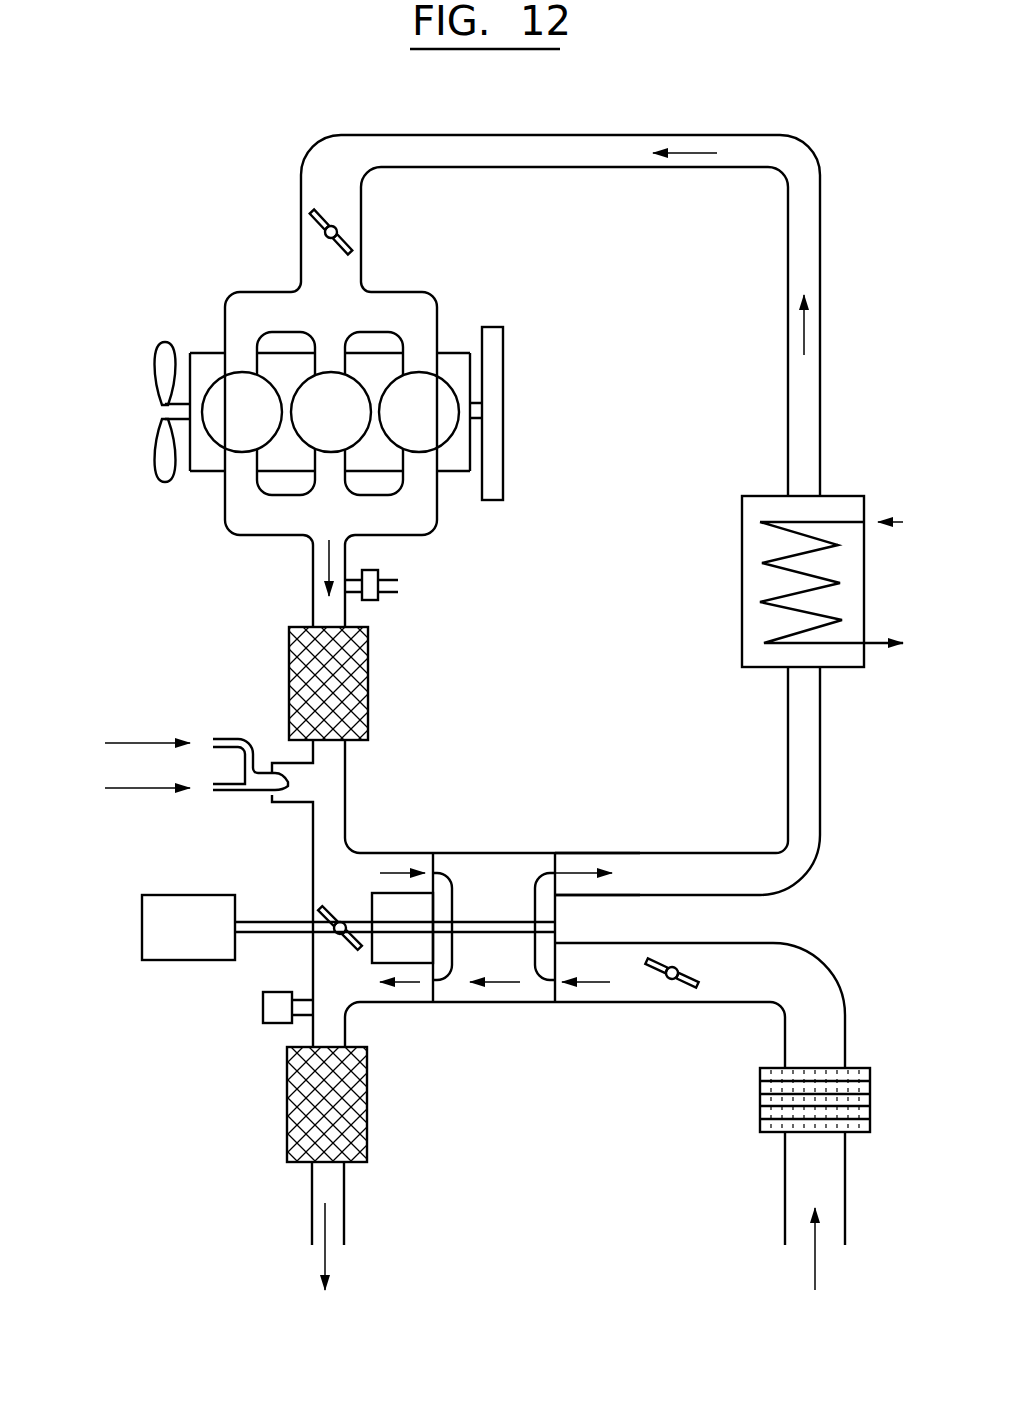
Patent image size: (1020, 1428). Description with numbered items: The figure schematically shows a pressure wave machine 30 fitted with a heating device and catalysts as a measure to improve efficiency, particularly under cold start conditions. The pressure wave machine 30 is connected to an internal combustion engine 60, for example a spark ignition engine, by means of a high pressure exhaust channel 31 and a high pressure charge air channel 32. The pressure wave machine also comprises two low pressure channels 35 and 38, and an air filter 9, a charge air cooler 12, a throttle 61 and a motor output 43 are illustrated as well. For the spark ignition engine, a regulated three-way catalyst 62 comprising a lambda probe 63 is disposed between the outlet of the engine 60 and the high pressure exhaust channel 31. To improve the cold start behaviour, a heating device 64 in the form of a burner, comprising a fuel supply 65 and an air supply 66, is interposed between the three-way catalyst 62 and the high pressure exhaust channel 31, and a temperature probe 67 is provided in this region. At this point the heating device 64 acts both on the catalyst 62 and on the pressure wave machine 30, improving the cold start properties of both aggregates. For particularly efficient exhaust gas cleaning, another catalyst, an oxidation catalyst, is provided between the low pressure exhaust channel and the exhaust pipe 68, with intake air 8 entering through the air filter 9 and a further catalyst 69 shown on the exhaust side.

The intake air 8 is at (815, 1318).
The air filter 9 is at (843, 1090).
The charge air cooler 12 is at (843, 508).
The pressure wave machine 30 is at (520, 877).
The high pressure exhaust channel 31 is at (378, 822).
The high pressure charge air channel 32 is at (628, 873).
The low pressure channel 35 is at (357, 975).
The low pressure channel 38 is at (627, 982).
The motor output 43 is at (157, 928).
The internal combustion engine 60 is at (197, 473).
The throttle 61 is at (322, 229).
The three-way catalyst 62 is at (340, 692).
The lambda probe 63 is at (398, 582).
The heating device 64 is at (290, 780).
The fuel supply 65 is at (126, 788).
The air supply 66 is at (126, 743).
The temperature probe 67 is at (268, 1013).
The exhaust pipe 68 is at (325, 1318).
The particulate filter / catalyst 69 is at (308, 1125).